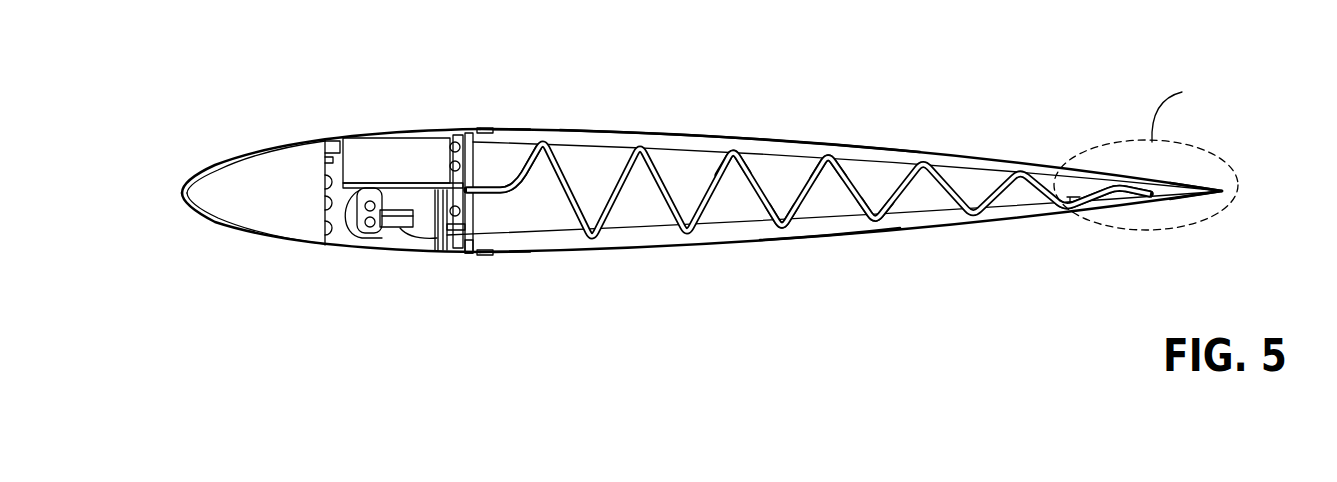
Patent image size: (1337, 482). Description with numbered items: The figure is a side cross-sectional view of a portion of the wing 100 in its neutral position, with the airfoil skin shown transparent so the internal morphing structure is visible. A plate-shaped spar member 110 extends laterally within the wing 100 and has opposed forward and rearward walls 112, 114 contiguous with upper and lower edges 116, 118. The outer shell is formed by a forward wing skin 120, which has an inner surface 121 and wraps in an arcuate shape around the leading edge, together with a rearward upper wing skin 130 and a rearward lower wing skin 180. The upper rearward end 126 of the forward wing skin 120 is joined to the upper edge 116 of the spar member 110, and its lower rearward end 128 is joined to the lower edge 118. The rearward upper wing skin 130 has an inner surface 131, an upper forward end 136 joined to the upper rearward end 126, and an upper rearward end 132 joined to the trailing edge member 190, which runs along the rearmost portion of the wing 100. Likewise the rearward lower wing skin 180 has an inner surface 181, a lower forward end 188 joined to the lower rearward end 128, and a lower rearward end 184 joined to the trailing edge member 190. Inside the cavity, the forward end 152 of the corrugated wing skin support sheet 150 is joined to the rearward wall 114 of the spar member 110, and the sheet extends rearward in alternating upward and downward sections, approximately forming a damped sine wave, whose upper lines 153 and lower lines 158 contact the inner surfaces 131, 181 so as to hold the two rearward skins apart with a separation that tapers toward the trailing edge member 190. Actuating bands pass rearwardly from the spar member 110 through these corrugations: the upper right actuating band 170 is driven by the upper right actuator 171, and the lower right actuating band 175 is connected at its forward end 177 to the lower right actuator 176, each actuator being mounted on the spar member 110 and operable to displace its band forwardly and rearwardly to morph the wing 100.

The wing 100 is at (245, 110).
The spar member 110 is at (442, 240).
The forward wall 112 is at (443, 130).
The rearward wall 114 is at (473, 225).
The upper edge 116 is at (470, 132).
The lower edge 118 is at (465, 253).
The forward wing skin 120 is at (238, 236).
The inner surface 121 is at (226, 163).
The upper rearward end 126 is at (478, 130).
The lower rearward end 128 is at (477, 257).
The rearward upper wing skin 130 is at (678, 128).
The inner surface 131 is at (772, 140).
The upper rearward end 132 is at (1152, 165).
The upper forward end 136 is at (507, 127).
The corrugated wing skin support sheet 150 is at (721, 203).
The forward end 152 is at (475, 187).
The upper lines of contact 153 is at (735, 142).
The lower lines of contact 158 is at (782, 232).
The upper right actuating band 170 is at (585, 132).
The upper right actuator 171 is at (330, 238).
The lower right actuating band 175 is at (655, 242).
The lower right actuator 176 is at (370, 146).
The forward end 177 is at (400, 232).
The rearward lower wing skin 180 is at (607, 256).
The inner surface 181 is at (830, 232).
The lower rearward end 184 is at (1153, 187).
The lower forward end 188 is at (497, 257).
The trailing edge member 190 is at (1199, 177).